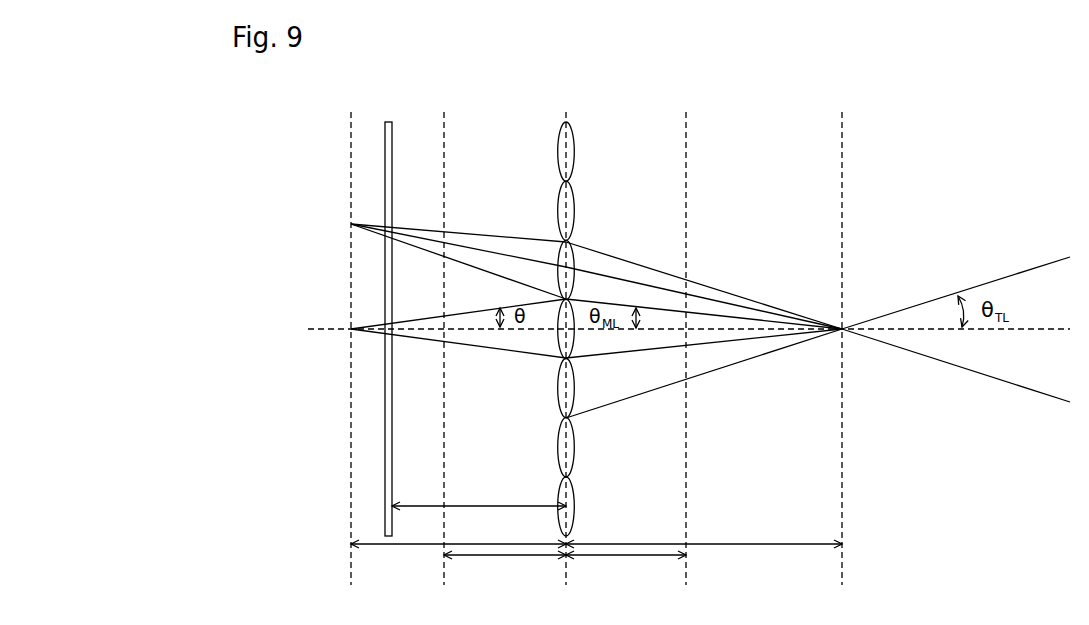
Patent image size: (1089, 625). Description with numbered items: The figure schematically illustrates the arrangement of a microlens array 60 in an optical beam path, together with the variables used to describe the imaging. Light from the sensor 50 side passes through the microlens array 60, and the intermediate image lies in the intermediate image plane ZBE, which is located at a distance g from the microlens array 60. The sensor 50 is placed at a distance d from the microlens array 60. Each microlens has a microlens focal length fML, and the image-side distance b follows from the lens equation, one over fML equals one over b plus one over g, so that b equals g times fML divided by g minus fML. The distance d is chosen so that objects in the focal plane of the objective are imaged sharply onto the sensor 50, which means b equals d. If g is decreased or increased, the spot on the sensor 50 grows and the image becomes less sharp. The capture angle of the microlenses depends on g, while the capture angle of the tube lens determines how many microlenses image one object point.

The sensor 50 is at (391, 307).
The microlens array 60 is at (577, 307).
The intermediate image plane ZBE is at (845, 331).
The distance between microlens array and sensor d is at (479, 522).
The image distance of the microlens b is at (458, 561).
The distance of the intermediate image from the microlens array g is at (704, 562).
The microlens focal length fML is at (565, 574).